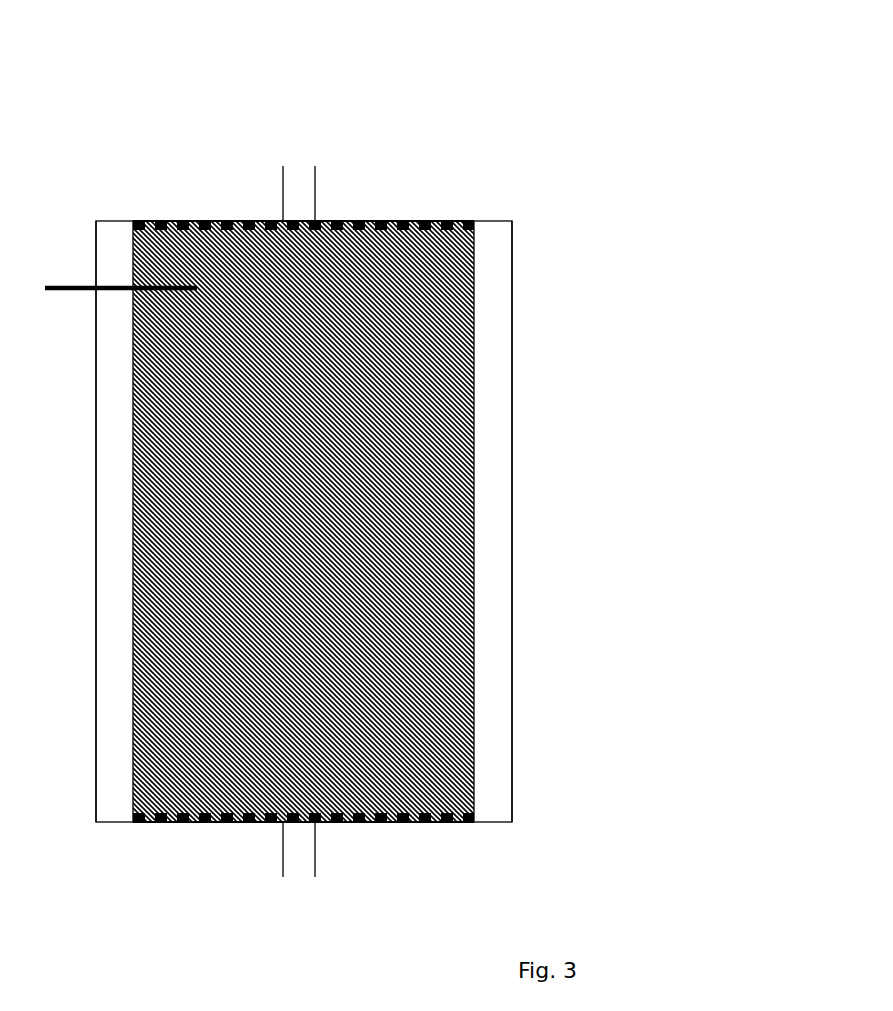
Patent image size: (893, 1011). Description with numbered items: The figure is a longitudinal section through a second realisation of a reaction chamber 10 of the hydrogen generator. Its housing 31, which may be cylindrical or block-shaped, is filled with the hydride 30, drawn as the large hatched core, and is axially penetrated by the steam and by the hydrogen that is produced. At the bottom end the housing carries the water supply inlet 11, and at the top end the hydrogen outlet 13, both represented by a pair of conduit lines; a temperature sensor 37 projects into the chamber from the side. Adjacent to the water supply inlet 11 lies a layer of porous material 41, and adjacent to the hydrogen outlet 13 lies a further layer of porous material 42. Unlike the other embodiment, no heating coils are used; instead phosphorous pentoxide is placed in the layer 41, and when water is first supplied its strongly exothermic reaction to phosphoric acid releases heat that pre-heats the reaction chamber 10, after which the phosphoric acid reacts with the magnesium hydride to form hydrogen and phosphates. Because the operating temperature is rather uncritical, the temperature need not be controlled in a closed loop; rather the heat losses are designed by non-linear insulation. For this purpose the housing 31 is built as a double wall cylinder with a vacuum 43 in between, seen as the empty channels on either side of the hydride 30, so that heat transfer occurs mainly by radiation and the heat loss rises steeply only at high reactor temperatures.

The reaction chamber 10 is at (481, 87).
The water supply inlet 11 is at (292, 846).
The hydrogen outlet 13 is at (293, 191).
The hydride 30 is at (195, 513).
The housing 31 is at (512, 460).
The temperature sensor 37 is at (77, 285).
The layer of porous material 41 is at (186, 822).
The further layer of porous material 42 is at (413, 222).
The vacuum 43 is at (113, 686).